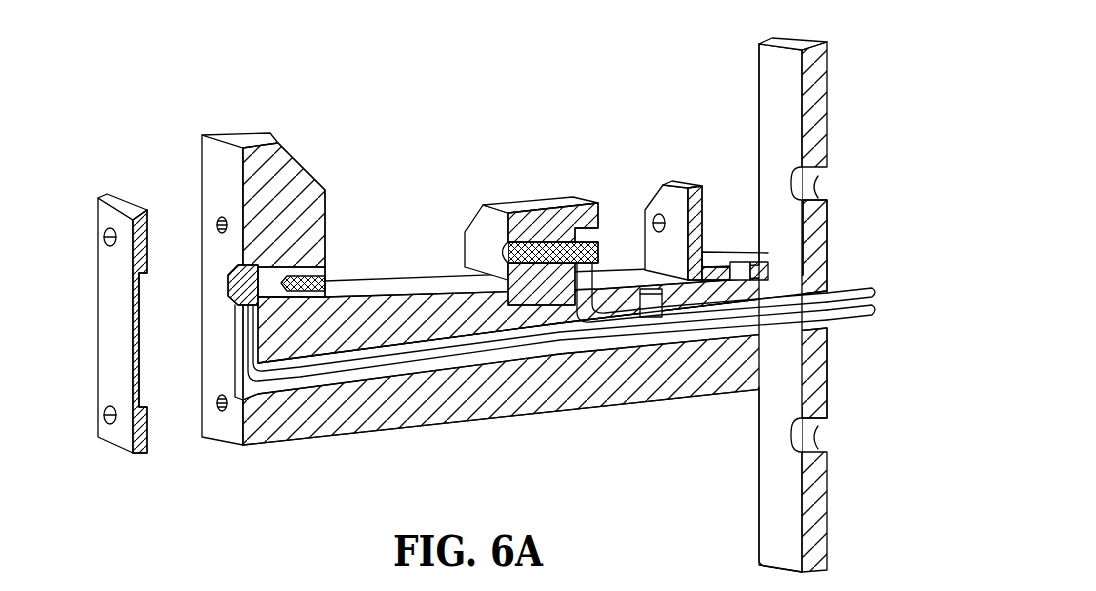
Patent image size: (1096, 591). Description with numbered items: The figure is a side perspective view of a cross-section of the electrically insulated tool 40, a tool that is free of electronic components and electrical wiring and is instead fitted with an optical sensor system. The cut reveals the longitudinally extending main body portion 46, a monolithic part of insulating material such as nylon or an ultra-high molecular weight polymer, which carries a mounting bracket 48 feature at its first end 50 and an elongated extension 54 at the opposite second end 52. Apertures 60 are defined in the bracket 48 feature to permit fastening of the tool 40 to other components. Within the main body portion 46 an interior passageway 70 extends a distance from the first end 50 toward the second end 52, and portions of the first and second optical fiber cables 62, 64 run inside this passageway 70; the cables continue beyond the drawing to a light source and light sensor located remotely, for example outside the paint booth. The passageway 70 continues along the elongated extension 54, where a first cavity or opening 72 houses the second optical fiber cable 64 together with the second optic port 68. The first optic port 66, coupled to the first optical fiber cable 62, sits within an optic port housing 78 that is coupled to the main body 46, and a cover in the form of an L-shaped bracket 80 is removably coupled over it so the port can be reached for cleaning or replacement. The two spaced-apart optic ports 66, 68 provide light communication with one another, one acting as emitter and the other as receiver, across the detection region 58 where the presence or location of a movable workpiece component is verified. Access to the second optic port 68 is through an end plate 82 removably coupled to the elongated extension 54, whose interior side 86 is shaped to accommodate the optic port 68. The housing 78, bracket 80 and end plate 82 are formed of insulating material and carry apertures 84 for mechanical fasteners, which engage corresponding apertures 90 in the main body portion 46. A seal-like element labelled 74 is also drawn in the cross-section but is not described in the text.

The electrically insulated tool 40 is at (868, 96).
The main body portion 46 is at (503, 400).
The mounting bracket 48 is at (776, 90).
The first end 50 is at (735, 470).
The second end 52 is at (549, 305).
The elongated extension 54 is at (242, 140).
The detection region 58 is at (410, 226).
The apertures 60 is at (812, 188).
The first optical fiber cable 62 is at (860, 296).
The second optical fiber cable 64 is at (238, 325).
The first optic port 66 is at (596, 247).
The second optic port 68 is at (262, 278).
The interior passageway 70 is at (488, 348).
The first cavity 72 is at (243, 400).
The seal 74 is at (327, 270).
The optic port housing 78 is at (520, 205).
The L-shaped bracket 80 is at (660, 186).
The end plate 82 is at (105, 302).
The apertures 84 is at (112, 237).
The interior side 86 is at (137, 332).
The apertures 90 is at (222, 225).